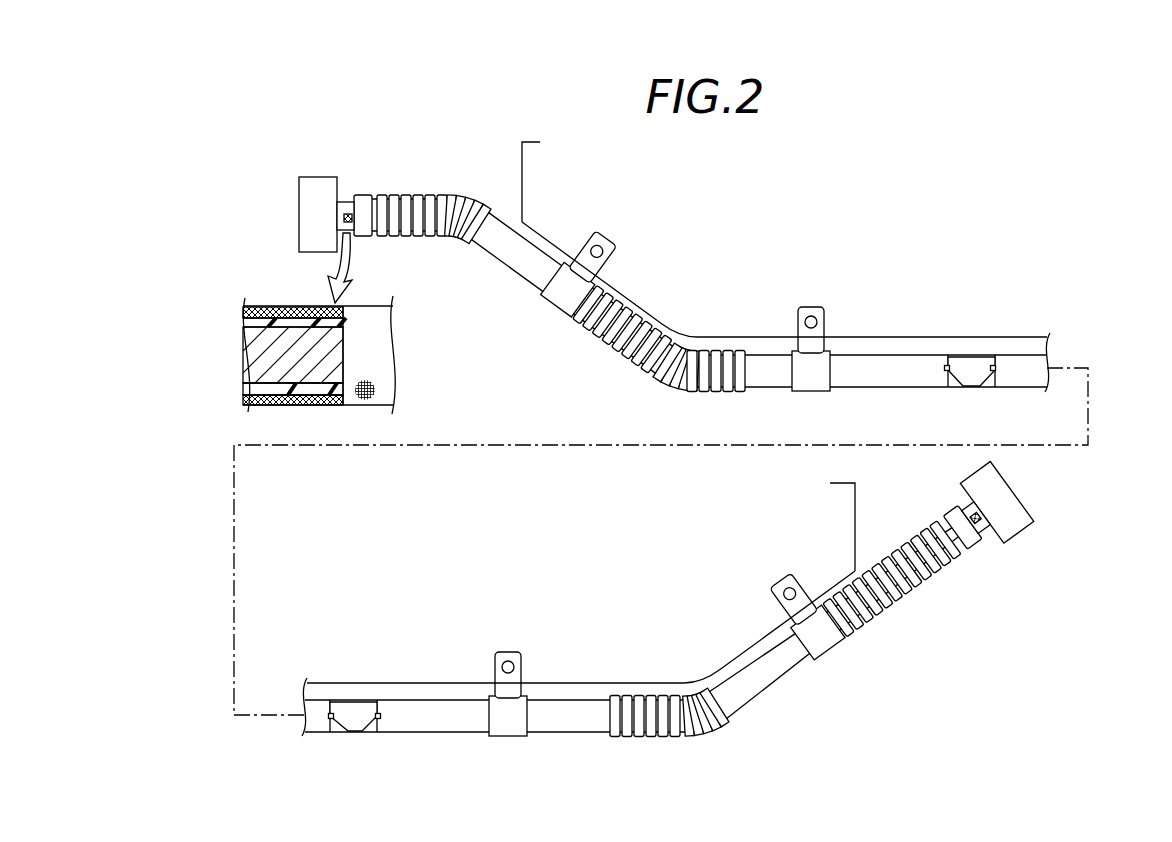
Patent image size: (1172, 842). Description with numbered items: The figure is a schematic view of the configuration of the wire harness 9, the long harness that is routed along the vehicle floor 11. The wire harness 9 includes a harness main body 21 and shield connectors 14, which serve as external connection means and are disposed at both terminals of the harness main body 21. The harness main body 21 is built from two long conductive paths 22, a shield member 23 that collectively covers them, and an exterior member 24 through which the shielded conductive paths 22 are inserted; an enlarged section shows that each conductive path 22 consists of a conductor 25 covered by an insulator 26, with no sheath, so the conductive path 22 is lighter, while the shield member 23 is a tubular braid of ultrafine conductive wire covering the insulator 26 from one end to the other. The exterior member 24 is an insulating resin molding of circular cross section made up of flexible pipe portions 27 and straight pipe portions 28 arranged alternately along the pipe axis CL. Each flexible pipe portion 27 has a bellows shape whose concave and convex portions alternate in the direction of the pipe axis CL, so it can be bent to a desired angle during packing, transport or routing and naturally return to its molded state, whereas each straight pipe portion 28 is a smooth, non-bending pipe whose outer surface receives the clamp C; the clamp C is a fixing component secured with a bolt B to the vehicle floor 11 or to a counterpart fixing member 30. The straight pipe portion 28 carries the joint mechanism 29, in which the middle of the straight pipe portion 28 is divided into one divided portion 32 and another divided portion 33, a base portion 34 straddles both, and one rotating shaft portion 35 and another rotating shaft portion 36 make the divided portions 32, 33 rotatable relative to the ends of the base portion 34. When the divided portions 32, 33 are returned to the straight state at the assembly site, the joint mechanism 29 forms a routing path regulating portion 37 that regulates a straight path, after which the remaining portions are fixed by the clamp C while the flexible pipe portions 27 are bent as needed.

The wire harness 9 is at (649, 477).
The vehicle floor 11 is at (680, 559).
The shield connector 14 is at (316, 188).
The harness main body 21 is at (676, 472).
The conductive path 22 is at (591, 441).
The shield member 23 is at (347, 205).
The exterior member 24 is at (888, 352).
The conductor 25 is at (252, 350).
The insulator 26 is at (264, 394).
The flexible pipe portion 27 is at (428, 196).
The straight pipe portion 28 is at (696, 502).
The joint mechanism 29 is at (662, 559).
The counterpart fixing member 30 is at (520, 190).
The one divided portion 32 is at (937, 365).
The other divided portion 33 is at (1014, 365).
The base portion 34 is at (662, 549).
The one rotating shaft portion 35 is at (947, 373).
The other rotating shaft portion 36 is at (993, 373).
The routing path regulating portion 37 is at (662, 559).
The bolt B is at (600, 243).
The clamp C is at (668, 502).
The pipe axis CL is at (1093, 393).